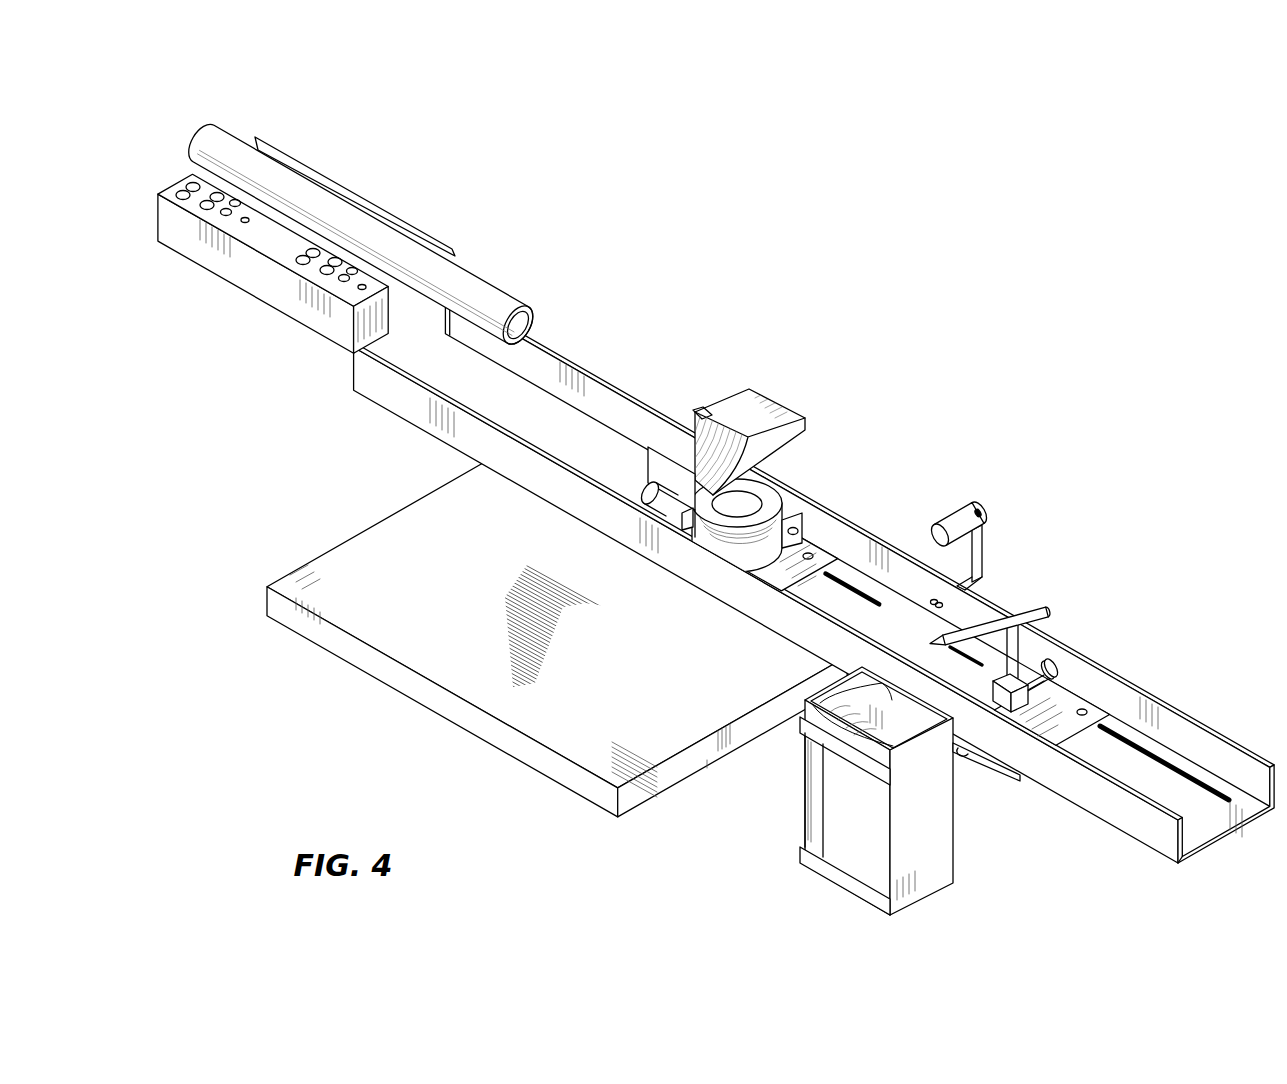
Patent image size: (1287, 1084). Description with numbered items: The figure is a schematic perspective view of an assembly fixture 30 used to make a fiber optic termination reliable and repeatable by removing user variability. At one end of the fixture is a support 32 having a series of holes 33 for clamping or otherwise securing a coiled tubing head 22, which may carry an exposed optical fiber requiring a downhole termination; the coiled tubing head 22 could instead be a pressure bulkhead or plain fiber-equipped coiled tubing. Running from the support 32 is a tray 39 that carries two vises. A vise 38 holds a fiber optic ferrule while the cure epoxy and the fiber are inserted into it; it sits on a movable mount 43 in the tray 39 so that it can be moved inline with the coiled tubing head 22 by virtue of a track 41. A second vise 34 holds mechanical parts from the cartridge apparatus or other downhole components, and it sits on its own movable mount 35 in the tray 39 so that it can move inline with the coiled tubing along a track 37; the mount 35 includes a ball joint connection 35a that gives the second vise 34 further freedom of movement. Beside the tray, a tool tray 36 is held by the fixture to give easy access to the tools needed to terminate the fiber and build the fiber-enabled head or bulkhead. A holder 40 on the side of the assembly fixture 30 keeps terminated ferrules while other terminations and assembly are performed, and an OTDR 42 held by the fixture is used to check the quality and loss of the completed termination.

The coiled tubing head 22 is at (220, 138).
The assembly fixture 30 is at (428, 425).
The support 32 is at (240, 262).
The holes 33 is at (185, 190).
The second vise 34 is at (773, 408).
The movable mount 35 is at (778, 517).
The ball joint connection 35a is at (758, 486).
The tool tray 36 is at (299, 582).
The track 37 is at (857, 590).
The vise 38 is at (1032, 609).
The tray 39 is at (1143, 692).
The holder 40 is at (980, 504).
The track 41 is at (1215, 790).
The OTDR 42 is at (940, 835).
The movable mount 43 is at (1060, 703).